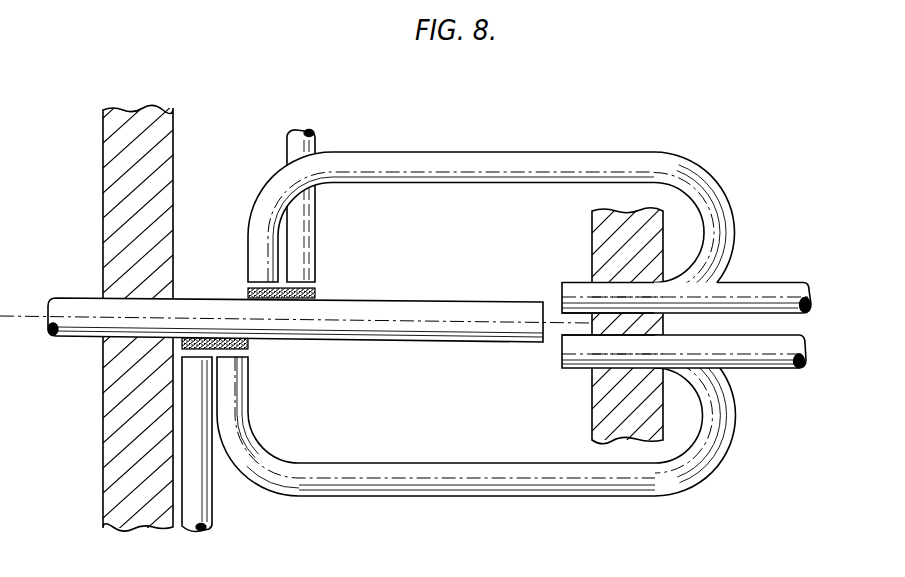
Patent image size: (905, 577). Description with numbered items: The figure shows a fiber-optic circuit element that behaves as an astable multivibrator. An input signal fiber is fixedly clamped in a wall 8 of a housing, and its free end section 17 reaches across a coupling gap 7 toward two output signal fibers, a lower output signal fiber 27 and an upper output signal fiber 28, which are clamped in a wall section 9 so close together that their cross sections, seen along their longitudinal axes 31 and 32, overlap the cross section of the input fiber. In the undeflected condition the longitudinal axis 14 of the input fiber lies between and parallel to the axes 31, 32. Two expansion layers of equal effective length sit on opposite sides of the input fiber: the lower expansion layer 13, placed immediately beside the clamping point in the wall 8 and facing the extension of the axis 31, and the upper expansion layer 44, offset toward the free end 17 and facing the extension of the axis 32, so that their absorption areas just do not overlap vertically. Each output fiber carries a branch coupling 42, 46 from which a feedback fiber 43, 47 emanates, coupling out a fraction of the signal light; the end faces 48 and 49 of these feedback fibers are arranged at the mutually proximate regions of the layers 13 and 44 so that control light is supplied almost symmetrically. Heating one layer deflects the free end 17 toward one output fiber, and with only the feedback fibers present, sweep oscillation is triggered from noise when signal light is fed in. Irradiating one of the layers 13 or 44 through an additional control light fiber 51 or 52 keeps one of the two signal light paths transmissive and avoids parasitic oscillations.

The coupling gap 7 is at (550, 308).
The wall 8 is at (166, 142).
The wall section 9 is at (602, 230).
The expansion layer 13 is at (246, 342).
The longitudinal axis 14 is at (295, 326).
The free end section 17 is at (512, 337).
The lower output signal fiber 27 is at (612, 371).
The upper output signal fiber 28 is at (608, 286).
The longitudinal axis 31 is at (681, 372).
The longitudinal axis 32 is at (681, 273).
The branch coupling 42 is at (693, 364).
The feedback fiber 43 is at (476, 415).
The expansion layer 44 is at (312, 293).
The branch coupling 46 is at (685, 280).
The feedback fiber 47 is at (468, 210).
The end face 48 is at (242, 358).
The end face 49 is at (250, 288).
The control light fiber 51 is at (200, 500).
The control light fiber 52 is at (302, 215).